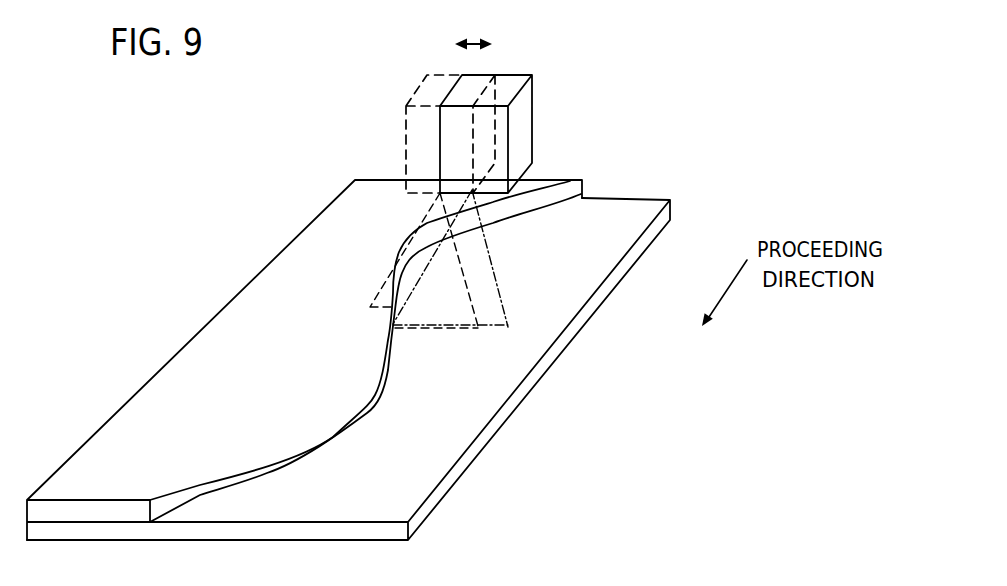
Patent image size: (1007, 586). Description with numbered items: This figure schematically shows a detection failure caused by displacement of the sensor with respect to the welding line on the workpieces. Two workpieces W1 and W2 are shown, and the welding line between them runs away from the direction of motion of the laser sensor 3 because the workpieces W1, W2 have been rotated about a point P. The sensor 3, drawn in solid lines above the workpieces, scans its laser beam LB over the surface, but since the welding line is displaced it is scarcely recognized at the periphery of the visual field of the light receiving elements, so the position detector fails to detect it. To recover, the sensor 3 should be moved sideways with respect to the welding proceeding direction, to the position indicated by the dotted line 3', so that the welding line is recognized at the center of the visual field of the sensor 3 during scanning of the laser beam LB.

The laser sensor 3 is at (529, 116).
The laser sensor (moved position) 3' is at (400, 116).
The laser beam LB is at (487, 247).
The workpiece W1 is at (475, 448).
The workpiece W2 is at (237, 290).
The point P is at (600, 345).